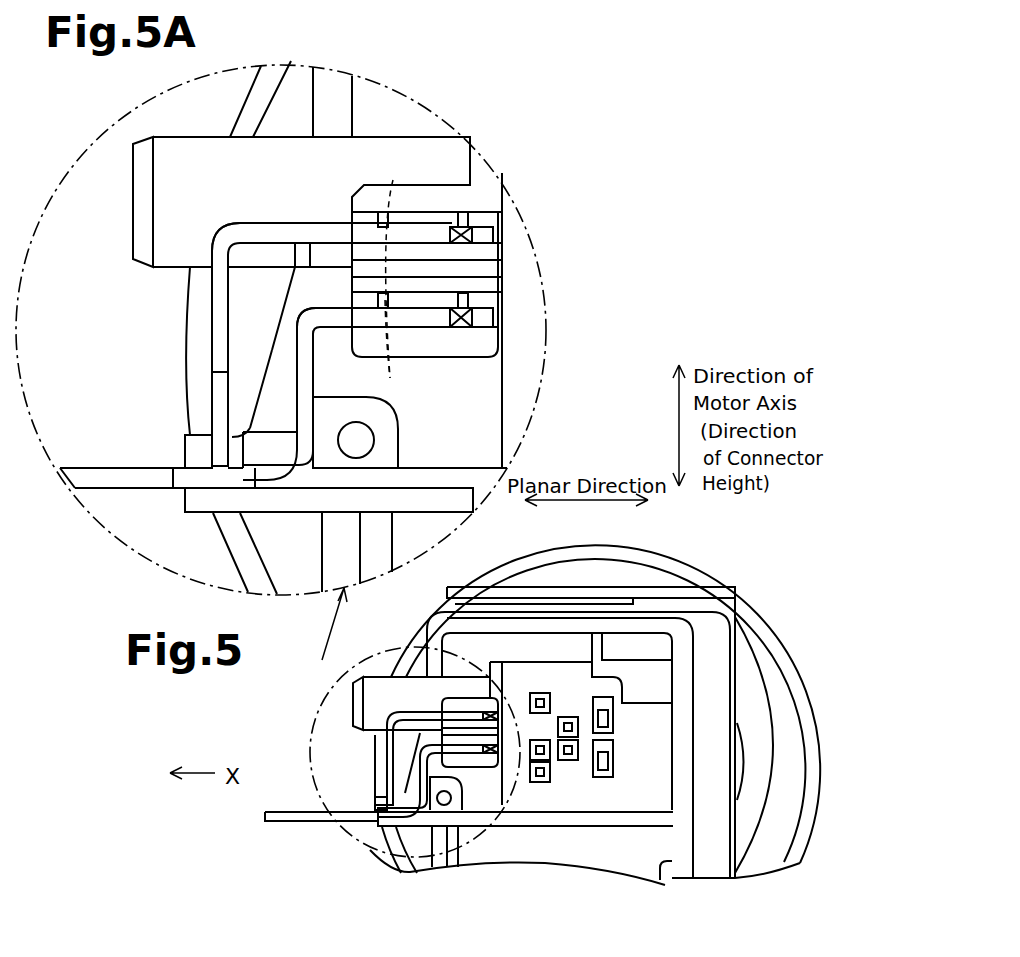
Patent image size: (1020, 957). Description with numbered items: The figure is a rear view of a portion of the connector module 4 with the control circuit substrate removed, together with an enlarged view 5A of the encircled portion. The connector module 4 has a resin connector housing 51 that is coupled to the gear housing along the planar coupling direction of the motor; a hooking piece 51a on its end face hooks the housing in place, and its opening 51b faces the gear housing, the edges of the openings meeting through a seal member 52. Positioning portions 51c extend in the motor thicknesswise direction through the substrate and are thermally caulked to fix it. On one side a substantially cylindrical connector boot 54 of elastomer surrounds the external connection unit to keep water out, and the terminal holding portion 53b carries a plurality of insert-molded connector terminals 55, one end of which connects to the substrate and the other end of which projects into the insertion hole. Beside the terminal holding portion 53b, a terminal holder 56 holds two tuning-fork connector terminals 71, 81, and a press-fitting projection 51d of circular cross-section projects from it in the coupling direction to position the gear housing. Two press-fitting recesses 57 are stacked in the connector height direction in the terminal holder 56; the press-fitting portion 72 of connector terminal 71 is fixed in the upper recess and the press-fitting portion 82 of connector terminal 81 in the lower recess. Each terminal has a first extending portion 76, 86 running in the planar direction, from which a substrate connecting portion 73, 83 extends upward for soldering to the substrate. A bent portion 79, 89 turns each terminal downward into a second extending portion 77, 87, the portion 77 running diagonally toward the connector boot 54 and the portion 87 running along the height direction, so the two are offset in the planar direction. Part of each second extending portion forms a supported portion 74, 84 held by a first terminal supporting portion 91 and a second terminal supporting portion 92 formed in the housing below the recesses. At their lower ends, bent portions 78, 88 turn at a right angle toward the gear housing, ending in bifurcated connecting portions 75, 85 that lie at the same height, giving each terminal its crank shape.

In FIG. 5, the connector module 4 is at (725, 550).
In FIG. 5, the connector housing 51 is at (738, 683).
In FIG. 5, the hooking piece 51a is at (508, 586).
In FIG. 5, the opening 51b is at (667, 866).
In FIG. 5A, the positioning portion 51c is at (356, 440).
In FIG. 5A, the press-fitting projection 51d is at (133, 204).
In FIG. 5, the press-fitting projection 51d is at (353, 690).
In FIG. 5, the seal member 52 is at (683, 866).
In FIG. 5, the terminal holding portion 53b is at (582, 667).
In FIG. 5A, the connector boot 54 is at (229, 120).
In FIG. 5, the connector boot 54 is at (673, 553).
In FIG. 5, the connector terminal 55 is at (600, 767).
In FIG. 5A, the terminal holder 56 is at (480, 348).
In FIG. 5, the terminal holder 56 is at (492, 693).
In FIG. 5A, the press-fitting recess 57 is at (423, 230).
In FIG. 5A, the connector terminal 71 is at (258, 222).
In FIG. 5, the connector terminal 71 is at (388, 757).
In FIG. 5A, the press-fitting portion 72 is at (391, 267).
In FIG. 5A, the substrate connecting portion 73 is at (480, 240).
In FIG. 5A, the supported portion 74 is at (207, 467).
In FIG. 5A, the bifurcated connecting portion 75 is at (82, 468).
In FIG. 5A, the first extending portion 76 is at (332, 228).
In FIG. 5A, the second extending portion 77 is at (208, 327).
In FIG. 5A, the bent portion 78 is at (218, 467).
In FIG. 5A, the bent portion 79 is at (218, 232).
In FIG. 5A, the connector terminal 81 is at (337, 303).
In FIG. 5, the connector terminal 81 is at (430, 777).
In FIG. 5A, the press-fitting portion 82 is at (391, 351).
In FIG. 5A, the substrate connecting portion 83 is at (480, 310).
In FIG. 5A, the supported portion 84 is at (297, 358).
In FIG. 5A, the bifurcated connecting portion 85 is at (266, 452).
In FIG. 5A, the first extending portion 86 is at (365, 322).
In FIG. 5A, the second extending portion 87 is at (297, 422).
In FIG. 5A, the bent portion 88 is at (308, 510).
In FIG. 5A, the bent portion 89 is at (300, 312).
In FIG. 5A, the first terminal supporting portion 91 is at (213, 443).
In FIG. 5A, the second terminal supporting portion 92 is at (315, 385).
In FIG. 5, the enlarged view region 5A is at (340, 832).